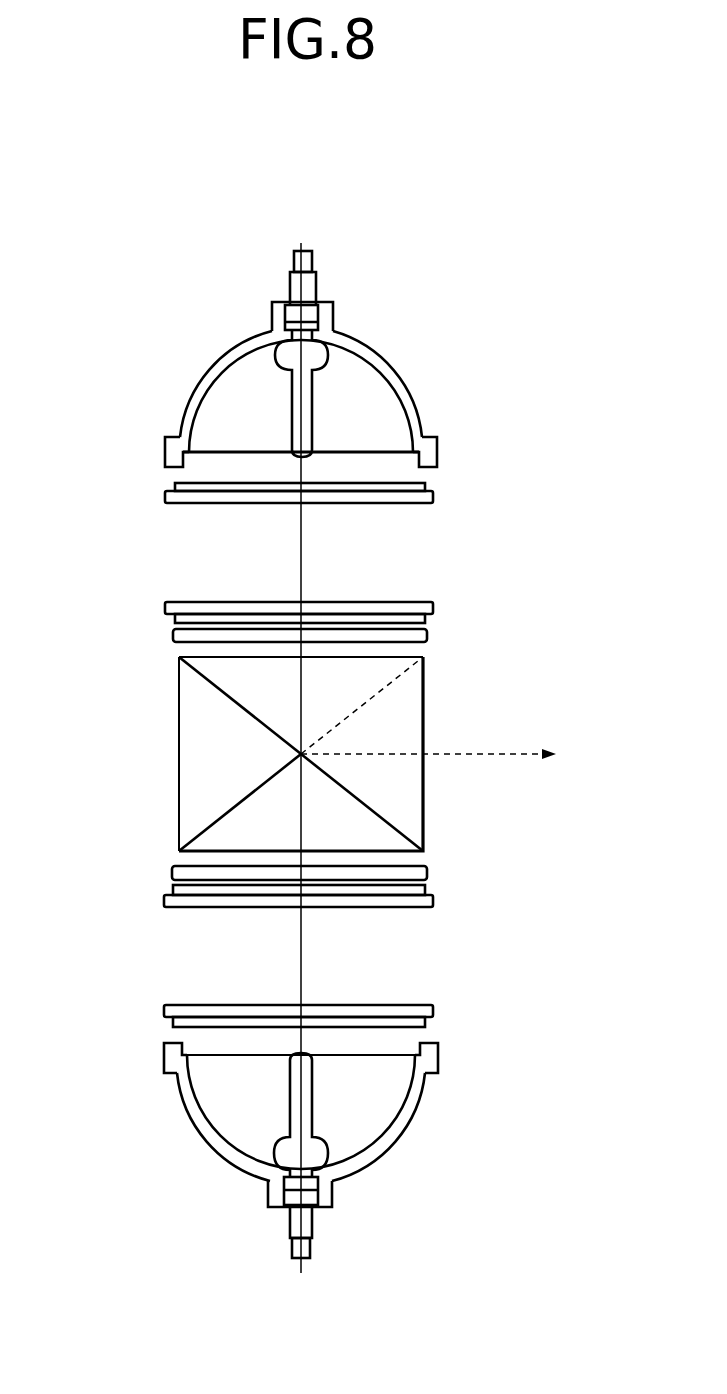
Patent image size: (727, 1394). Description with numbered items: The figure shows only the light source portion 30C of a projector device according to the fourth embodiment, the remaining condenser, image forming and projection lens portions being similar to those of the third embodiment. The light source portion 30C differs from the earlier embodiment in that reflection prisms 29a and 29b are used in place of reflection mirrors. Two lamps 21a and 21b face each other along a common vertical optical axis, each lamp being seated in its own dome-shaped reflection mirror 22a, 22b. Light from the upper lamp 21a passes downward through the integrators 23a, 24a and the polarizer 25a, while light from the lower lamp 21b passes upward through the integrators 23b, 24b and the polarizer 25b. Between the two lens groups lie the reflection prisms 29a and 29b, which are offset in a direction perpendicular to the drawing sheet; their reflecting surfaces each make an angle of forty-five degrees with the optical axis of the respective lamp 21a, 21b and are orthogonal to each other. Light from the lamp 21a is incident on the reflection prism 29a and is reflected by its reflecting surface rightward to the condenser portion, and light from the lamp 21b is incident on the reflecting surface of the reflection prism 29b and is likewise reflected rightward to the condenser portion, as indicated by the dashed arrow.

The light source portion 30C is at (514, 300).
The lamp 21a is at (291, 418).
The reflection mirror 22a is at (207, 371).
The integrator 23a is at (433, 490).
The integrator 24a is at (432, 607).
The polarizer 25a is at (430, 635).
The reflection prism 29a is at (237, 704).
The reflection prism 29b is at (238, 800).
The polarizer 25b is at (427, 867).
The integrator 24b is at (435, 897).
The integrator 23b is at (435, 1015).
The reflection mirror 22b is at (211, 1147).
The lamp 21b is at (288, 1092).